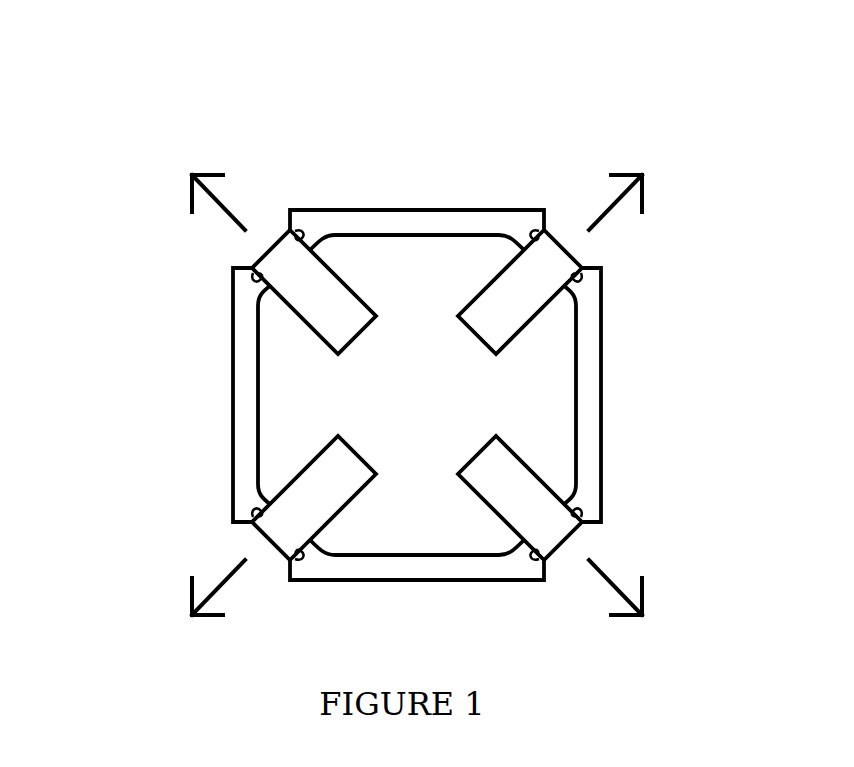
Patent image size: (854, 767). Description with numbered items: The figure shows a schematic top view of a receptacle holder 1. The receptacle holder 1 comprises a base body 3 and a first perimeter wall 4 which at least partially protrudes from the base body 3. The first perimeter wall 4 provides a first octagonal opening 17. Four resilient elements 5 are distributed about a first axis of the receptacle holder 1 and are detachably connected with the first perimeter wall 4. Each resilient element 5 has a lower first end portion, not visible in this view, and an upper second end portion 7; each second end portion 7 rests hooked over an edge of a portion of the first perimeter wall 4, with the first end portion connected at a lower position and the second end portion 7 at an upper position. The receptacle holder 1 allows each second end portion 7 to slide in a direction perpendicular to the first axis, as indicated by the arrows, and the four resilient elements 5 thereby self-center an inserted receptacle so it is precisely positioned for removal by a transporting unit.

The receptacle holder 1 is at (522, 145).
The base body 3 is at (413, 277).
The first perimeter wall 4 is at (367, 225).
The resilient element 5 is at (312, 305).
The second end portion 7 is at (255, 252).
The first octagonal opening 17 is at (257, 410).